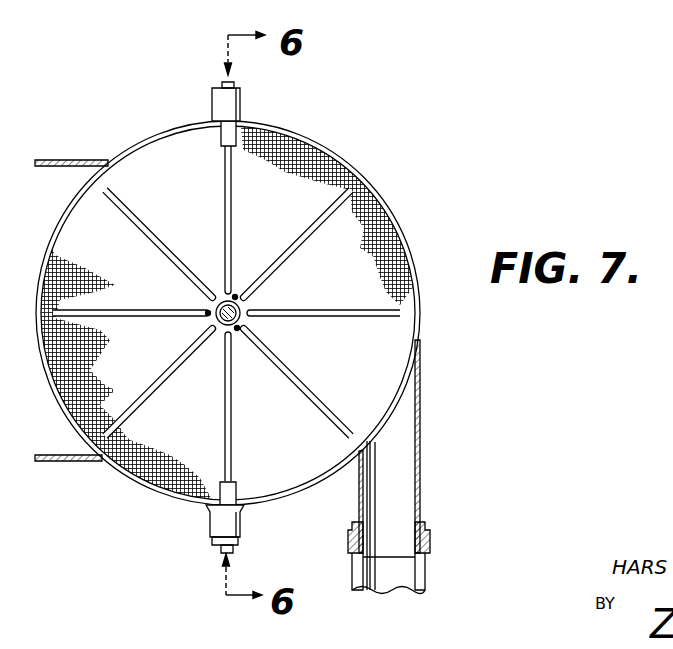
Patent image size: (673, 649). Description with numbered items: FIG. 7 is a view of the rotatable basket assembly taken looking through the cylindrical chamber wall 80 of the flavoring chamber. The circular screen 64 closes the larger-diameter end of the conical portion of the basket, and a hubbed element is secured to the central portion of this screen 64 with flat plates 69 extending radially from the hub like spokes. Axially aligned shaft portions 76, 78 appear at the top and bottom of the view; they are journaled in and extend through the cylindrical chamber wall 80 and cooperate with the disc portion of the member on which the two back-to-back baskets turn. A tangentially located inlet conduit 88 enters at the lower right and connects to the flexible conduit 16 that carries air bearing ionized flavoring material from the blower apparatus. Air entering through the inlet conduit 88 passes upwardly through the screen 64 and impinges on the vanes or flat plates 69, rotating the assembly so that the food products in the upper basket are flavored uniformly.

The screen 64 is at (306, 137).
The cylindrical chamber wall 80 is at (355, 170).
The flat plates 69 is at (306, 310).
The shaft portion 78 is at (212, 92).
The shaft portion 76 is at (236, 548).
The inlet conduit 88 is at (421, 470).
The flexible conduit 16 is at (430, 560).